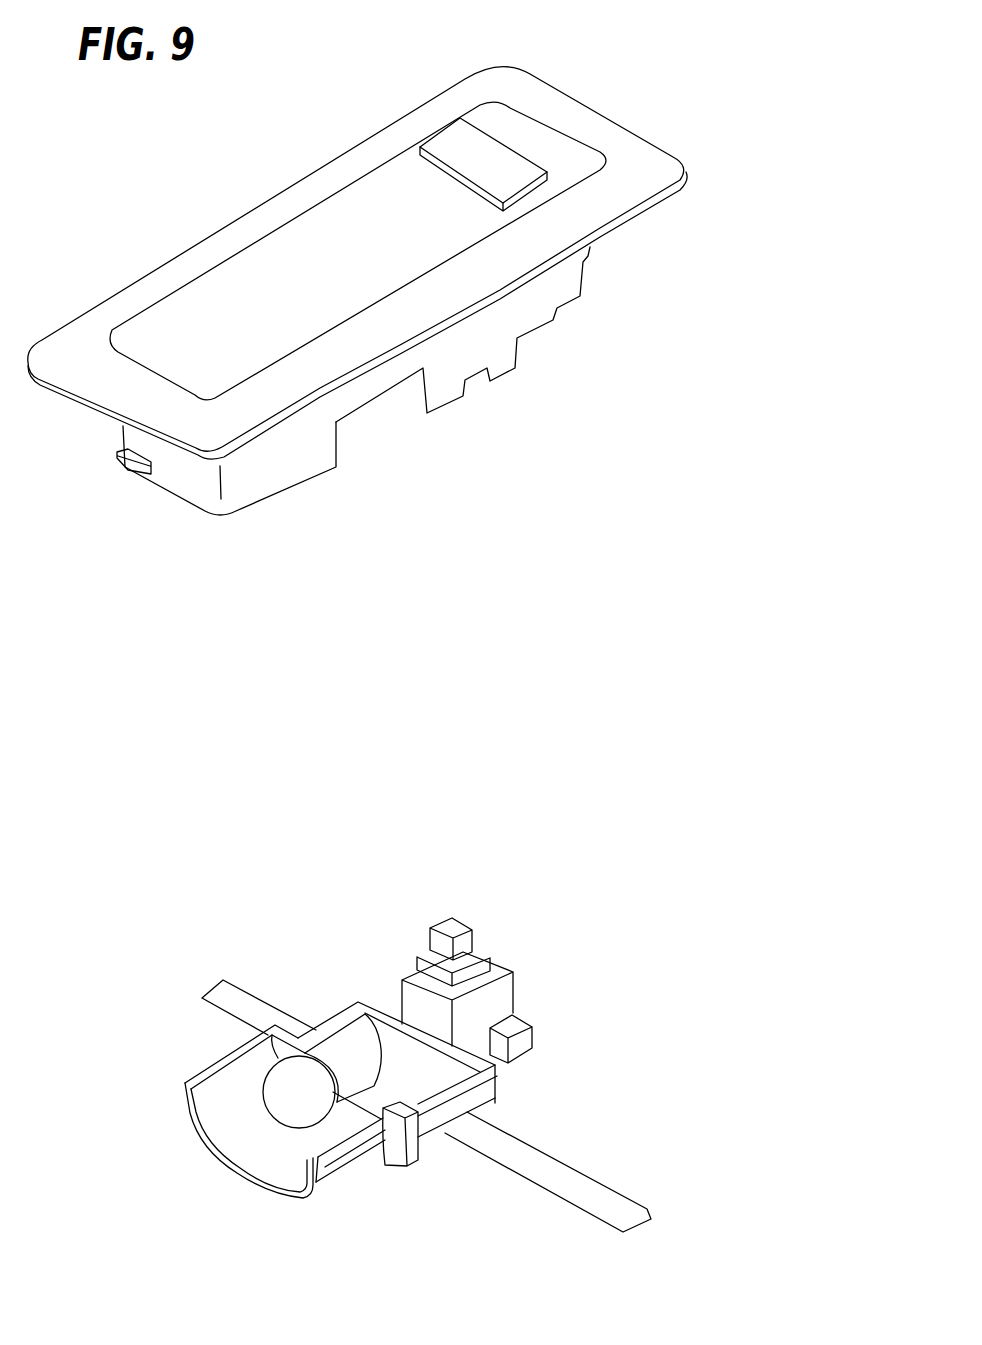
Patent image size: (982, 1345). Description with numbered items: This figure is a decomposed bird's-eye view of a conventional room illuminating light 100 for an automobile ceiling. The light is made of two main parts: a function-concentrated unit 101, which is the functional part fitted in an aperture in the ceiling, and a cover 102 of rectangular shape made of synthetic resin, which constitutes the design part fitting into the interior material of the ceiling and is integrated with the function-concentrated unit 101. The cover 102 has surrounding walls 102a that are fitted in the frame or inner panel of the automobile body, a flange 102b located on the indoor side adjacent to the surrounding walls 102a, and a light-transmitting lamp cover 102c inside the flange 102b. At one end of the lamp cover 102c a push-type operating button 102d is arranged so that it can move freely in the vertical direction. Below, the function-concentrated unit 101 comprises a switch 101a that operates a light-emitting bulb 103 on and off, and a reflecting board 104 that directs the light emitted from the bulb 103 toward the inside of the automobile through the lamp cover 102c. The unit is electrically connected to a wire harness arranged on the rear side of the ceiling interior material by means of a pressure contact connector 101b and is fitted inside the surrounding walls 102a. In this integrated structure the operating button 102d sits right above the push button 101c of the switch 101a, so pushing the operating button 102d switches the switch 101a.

The room illuminating light 100 is at (728, 485).
The function-concentrated unit 101 is at (648, 823).
The switch 101a is at (488, 953).
The pressure contact connector 101b is at (484, 1094).
The push button 101c is at (452, 925).
The cover 102 is at (640, 480).
The surrounding walls 102a is at (279, 478).
The flange 102b is at (637, 162).
The lamp cover 102c is at (235, 287).
The operating button 102d is at (492, 162).
The bulb 103 is at (290, 1112).
The reflecting board 104 is at (183, 1117).